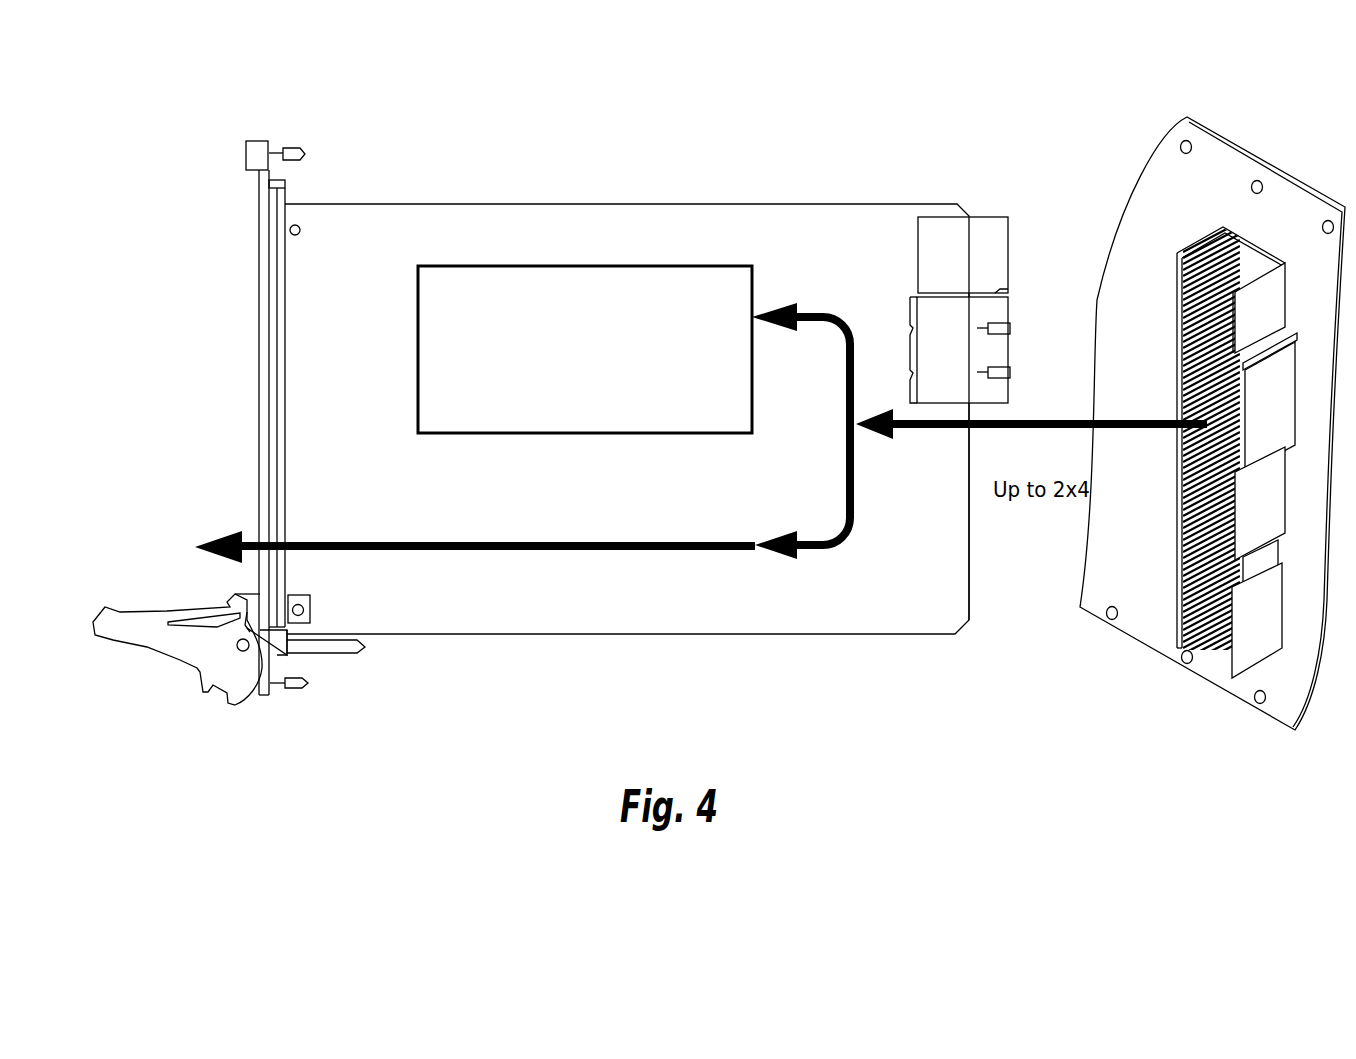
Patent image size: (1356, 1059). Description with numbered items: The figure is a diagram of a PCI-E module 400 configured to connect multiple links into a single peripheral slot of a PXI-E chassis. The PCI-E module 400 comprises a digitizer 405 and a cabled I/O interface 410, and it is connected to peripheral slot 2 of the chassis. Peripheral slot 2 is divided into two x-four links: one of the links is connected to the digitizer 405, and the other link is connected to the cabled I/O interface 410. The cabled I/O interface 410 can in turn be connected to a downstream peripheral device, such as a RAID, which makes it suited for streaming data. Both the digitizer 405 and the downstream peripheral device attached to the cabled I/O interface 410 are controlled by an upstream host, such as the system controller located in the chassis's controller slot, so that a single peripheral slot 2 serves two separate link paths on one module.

The PCI-E module 400 is at (787, 211).
The digitizer 405 is at (418, 296).
The cabled I/O interface 410 is at (338, 541).
The peripheral slot 2 is at (1217, 654).